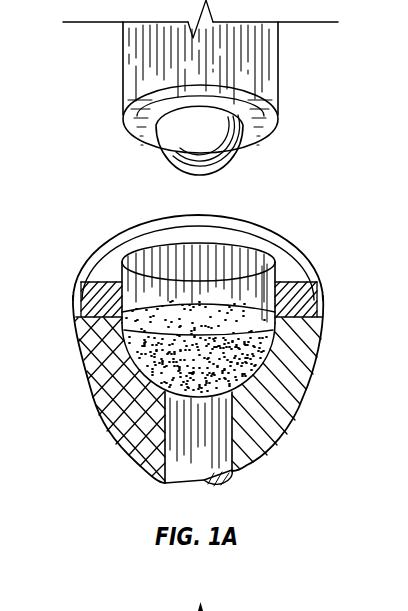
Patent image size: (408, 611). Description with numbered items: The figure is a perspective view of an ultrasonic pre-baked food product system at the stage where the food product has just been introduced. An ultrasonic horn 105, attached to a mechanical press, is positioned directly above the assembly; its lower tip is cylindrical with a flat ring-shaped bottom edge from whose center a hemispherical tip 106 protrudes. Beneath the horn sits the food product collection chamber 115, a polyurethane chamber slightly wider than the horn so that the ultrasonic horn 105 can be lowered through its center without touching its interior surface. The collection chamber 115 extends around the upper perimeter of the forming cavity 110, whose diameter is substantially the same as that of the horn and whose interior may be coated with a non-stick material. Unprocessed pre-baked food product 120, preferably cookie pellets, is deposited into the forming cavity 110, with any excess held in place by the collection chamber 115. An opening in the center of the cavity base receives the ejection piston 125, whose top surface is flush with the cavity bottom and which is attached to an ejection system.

The ultrasonic horn 105 is at (137, 72).
The hemispherical tip 106 is at (239, 152).
The forming cavity 110 is at (83, 357).
The food product collection chamber 115 is at (107, 258).
The unprocessed pre-baked food product 120 is at (96, 400).
The ejection piston 125 is at (134, 453).